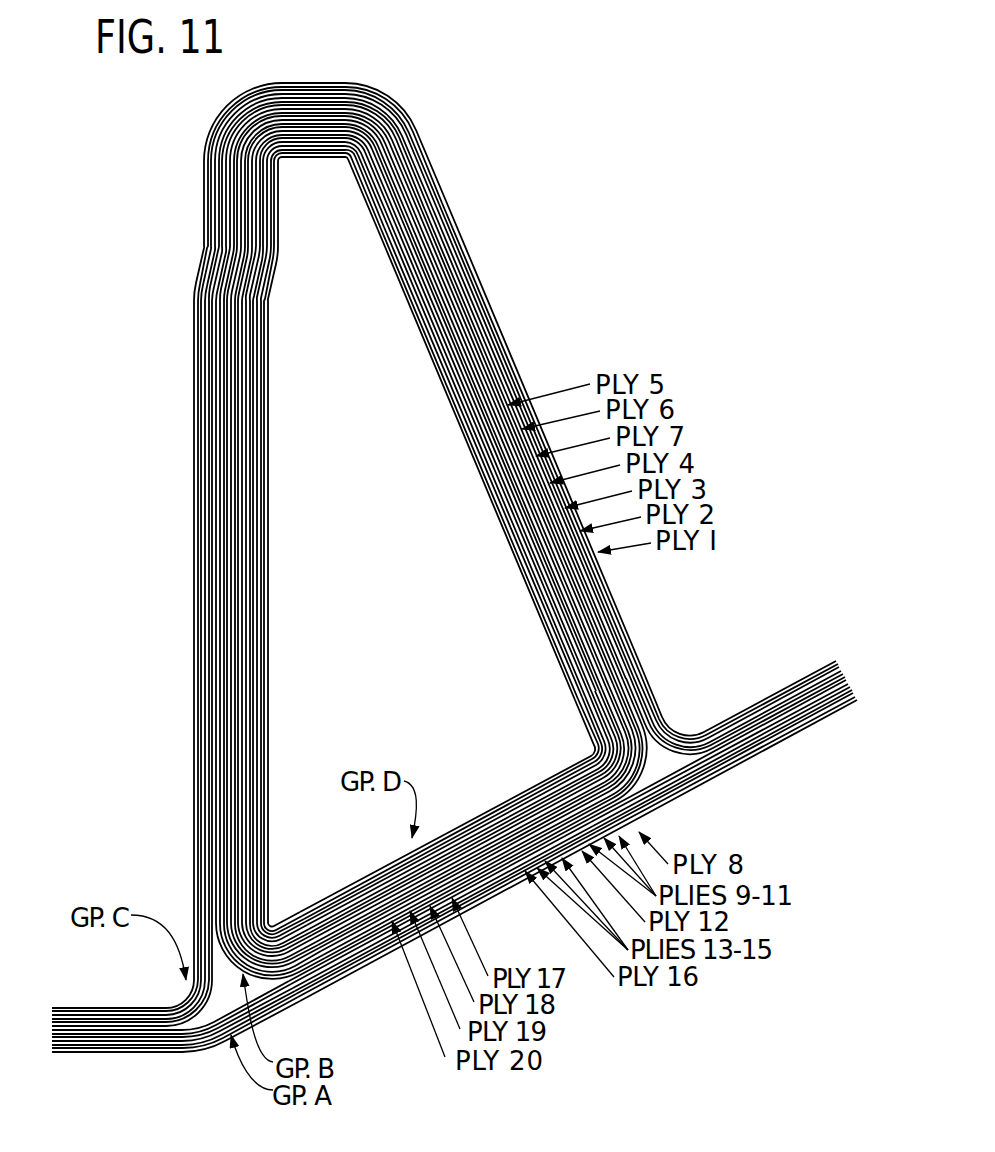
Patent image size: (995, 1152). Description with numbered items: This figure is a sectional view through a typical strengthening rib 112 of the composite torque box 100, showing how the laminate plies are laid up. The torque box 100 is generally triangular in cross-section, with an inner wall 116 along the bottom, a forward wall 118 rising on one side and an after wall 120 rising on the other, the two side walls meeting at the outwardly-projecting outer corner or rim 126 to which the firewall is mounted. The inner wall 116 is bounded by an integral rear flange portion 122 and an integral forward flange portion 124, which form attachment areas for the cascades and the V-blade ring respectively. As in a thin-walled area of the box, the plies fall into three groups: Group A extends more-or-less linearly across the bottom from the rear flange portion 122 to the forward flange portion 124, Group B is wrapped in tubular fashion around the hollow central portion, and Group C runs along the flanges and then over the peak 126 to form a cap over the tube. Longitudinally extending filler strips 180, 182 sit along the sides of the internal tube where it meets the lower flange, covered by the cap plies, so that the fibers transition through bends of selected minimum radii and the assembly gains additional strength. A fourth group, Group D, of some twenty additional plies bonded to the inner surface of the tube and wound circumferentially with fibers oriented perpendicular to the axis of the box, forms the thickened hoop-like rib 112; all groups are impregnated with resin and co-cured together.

The torque box 100 is at (470, 150).
The rib 112 is at (245, 417).
The inner wall 116 is at (355, 967).
The forward wall 118 is at (212, 459).
The after wall 120 is at (461, 262).
The rear flange portion 122 is at (791, 688).
The forward flange portion 124 is at (88, 1020).
The outer corner or rim 126 is at (356, 83).
The filler strip 180 is at (208, 992).
The filler strip 182 is at (680, 757).